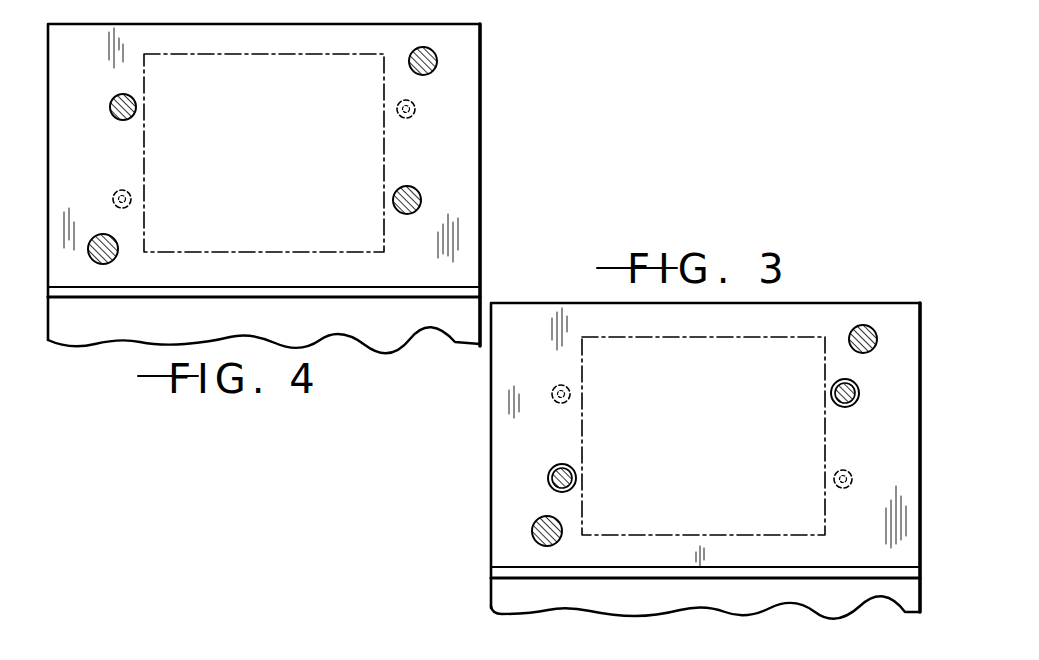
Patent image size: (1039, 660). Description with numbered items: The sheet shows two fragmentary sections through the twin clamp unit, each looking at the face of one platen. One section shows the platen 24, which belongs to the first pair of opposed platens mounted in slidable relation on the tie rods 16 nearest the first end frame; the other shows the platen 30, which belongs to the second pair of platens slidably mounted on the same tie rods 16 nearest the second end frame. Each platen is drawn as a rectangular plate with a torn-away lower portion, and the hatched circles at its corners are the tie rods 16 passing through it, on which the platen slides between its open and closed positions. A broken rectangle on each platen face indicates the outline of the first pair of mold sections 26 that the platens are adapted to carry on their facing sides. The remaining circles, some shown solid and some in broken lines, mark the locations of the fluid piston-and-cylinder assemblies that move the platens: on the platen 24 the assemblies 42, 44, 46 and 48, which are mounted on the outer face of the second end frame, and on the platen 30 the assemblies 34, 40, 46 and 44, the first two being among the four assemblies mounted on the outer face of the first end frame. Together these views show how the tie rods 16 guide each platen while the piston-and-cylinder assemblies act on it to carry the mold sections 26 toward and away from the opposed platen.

In FIG. 4, the tie rods 16 is at (437, 59).
In FIG. 3, the tie rods 16 is at (536, 519).
In FIG. 4, the platen 24 is at (480, 142).
In FIG. 4, the first pair of mold sections 26 is at (330, 254).
In FIG. 3, the first pair of mold sections 26 is at (804, 335).
In FIG. 3, the platen 30 is at (535, 303).
In FIG. 3, the fluid piston-and-cylinder assembly 34 is at (859, 391).
In FIG. 3, the fluid piston-and-cylinder assembly 40 is at (550, 468).
In FIG. 4, the piston-and-cylinder assembly 42 is at (415, 108).
In FIG. 4, the piston-and-cylinder assembly 44 is at (421, 196).
In FIG. 3, the piston-and-cylinder assembly 44 is at (852, 474).
In FIG. 4, the piston-and-cylinder assembly 46 is at (111, 96).
In FIG. 3, the piston-and-cylinder assembly 46 is at (553, 386).
In FIG. 4, the piston-and-cylinder assembly 48 is at (113, 192).